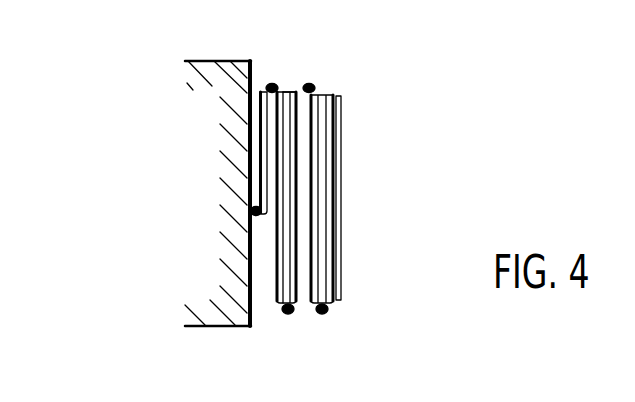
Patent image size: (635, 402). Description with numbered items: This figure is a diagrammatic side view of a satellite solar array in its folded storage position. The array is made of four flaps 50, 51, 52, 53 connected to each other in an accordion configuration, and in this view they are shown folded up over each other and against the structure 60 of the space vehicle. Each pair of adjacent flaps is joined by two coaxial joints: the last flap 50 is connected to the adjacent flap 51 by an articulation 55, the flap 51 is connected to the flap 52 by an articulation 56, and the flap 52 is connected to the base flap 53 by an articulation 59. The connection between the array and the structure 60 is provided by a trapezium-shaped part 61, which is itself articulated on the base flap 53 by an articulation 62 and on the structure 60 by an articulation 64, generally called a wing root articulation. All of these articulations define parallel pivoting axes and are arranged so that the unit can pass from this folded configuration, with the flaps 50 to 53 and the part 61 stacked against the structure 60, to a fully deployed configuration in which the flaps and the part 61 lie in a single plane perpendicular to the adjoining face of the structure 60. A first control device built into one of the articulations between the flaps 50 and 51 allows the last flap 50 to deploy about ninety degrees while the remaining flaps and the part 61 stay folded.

The last flap 50 is at (340, 150).
The flap 51 is at (314, 173).
The flap 52 is at (298, 207).
The base flap 53 is at (278, 239).
The articulation 55 is at (324, 313).
The articulation 56 is at (311, 85).
The articulation 59 is at (289, 313).
The structure of the satellite 60 is at (178, 157).
The trapezium-shaped part 61 is at (262, 112).
The articulation 62 is at (274, 85).
The wing root articulation 64 is at (256, 215).